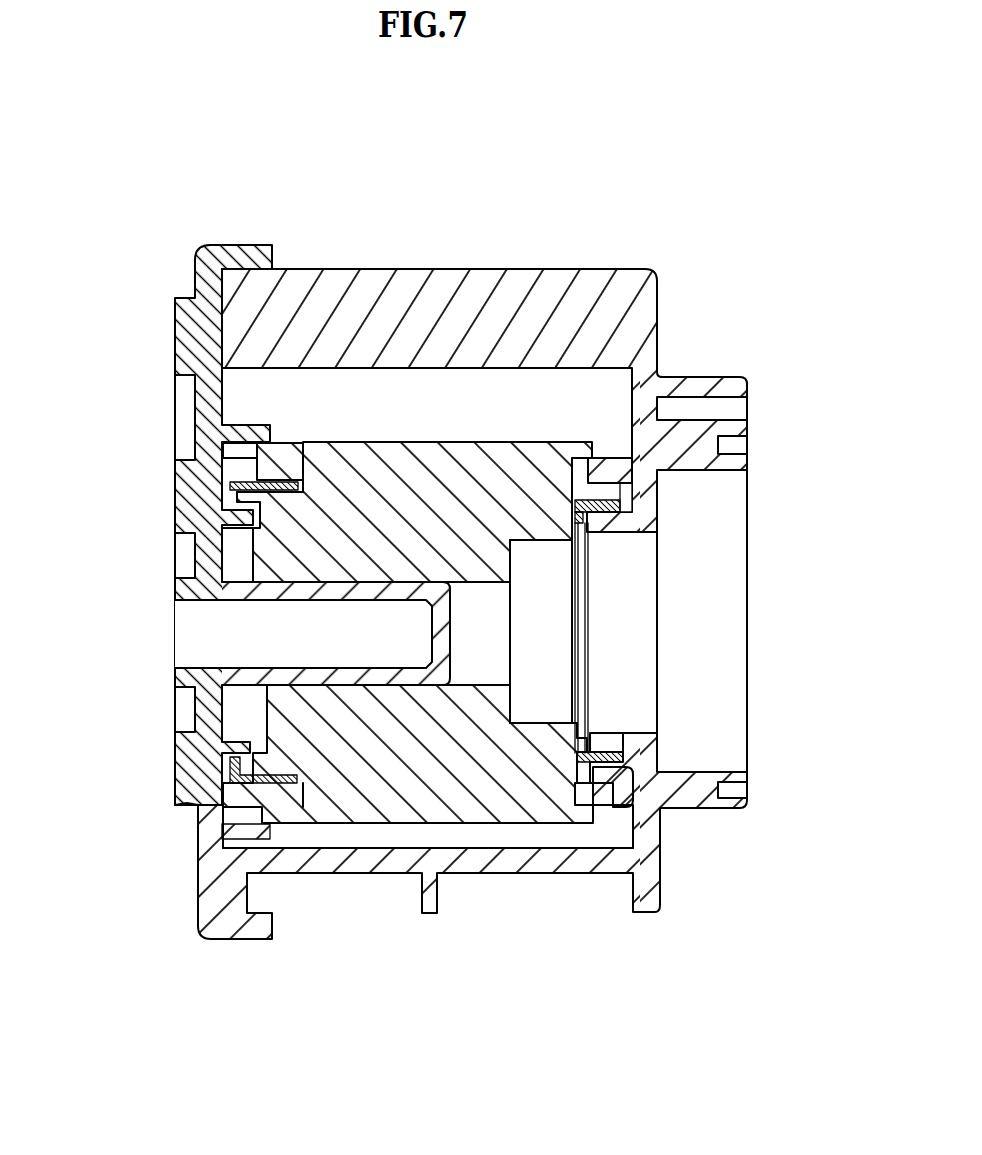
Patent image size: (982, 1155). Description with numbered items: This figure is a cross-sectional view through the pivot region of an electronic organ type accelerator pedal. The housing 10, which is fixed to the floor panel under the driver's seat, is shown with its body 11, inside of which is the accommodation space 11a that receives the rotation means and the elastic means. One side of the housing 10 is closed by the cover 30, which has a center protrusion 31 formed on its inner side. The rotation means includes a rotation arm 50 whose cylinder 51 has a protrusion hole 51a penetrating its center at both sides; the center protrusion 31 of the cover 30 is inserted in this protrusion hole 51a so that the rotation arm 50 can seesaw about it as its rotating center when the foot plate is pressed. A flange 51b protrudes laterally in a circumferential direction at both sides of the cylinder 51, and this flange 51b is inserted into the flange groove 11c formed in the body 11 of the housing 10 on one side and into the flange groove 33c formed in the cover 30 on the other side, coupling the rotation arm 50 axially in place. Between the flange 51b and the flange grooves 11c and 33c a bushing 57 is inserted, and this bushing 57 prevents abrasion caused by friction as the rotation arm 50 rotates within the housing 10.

The housing 10 is at (559, 268).
The body 11 is at (693, 450).
The accommodation space 11a is at (379, 834).
The flange groove 11c is at (623, 762).
The cover 30 is at (174, 523).
The center protrusion 31 is at (333, 673).
The flange groove 33c is at (240, 447).
The rotation arm 50 is at (510, 821).
The cylinder 51 is at (456, 462).
The protrusion hole 51a is at (483, 586).
The flange 51b is at (275, 455).
The bushing 57 is at (233, 485).